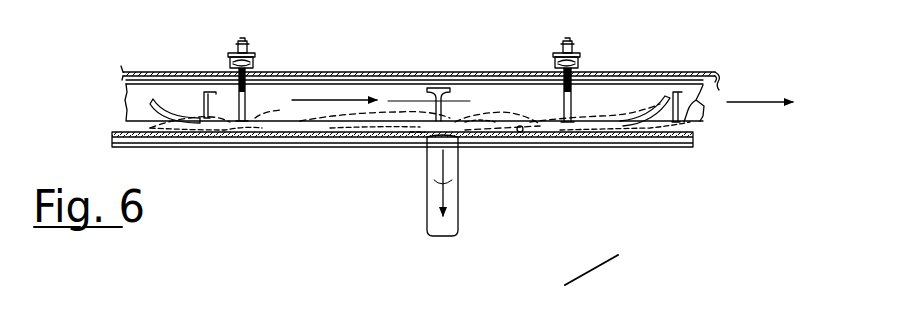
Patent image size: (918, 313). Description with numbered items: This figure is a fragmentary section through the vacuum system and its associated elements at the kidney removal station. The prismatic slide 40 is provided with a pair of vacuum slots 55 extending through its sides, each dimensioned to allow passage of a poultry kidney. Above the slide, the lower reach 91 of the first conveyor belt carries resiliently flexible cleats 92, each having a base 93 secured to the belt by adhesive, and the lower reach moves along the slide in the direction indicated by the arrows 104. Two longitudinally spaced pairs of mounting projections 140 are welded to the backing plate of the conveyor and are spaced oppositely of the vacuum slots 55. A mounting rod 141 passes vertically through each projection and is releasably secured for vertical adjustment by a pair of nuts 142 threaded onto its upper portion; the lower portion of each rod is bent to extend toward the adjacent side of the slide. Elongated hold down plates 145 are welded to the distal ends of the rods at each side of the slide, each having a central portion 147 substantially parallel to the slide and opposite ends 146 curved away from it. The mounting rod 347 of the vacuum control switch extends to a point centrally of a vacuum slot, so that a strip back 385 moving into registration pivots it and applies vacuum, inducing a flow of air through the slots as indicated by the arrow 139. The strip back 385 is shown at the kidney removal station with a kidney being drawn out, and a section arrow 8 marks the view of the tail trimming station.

The section line arrow 8 is at (616, 252).
The prismatic slide 40 is at (108, 134).
The vacuum slots 55 is at (430, 140).
The lower reach 91 is at (720, 72).
The cleats 92 is at (686, 107).
The base 93 is at (200, 89).
The arrows 104 is at (338, 100).
The arrow 139 is at (447, 188).
The mounting projections 140 is at (256, 59).
The mounting rod 141 is at (248, 104).
The nuts 142 is at (236, 64).
The hold down plates 145 is at (478, 120).
The opposite ends 146 is at (157, 99).
The central portion 147 is at (328, 138).
The mounting rod 347 is at (520, 132).
The strip back 385 is at (182, 130).